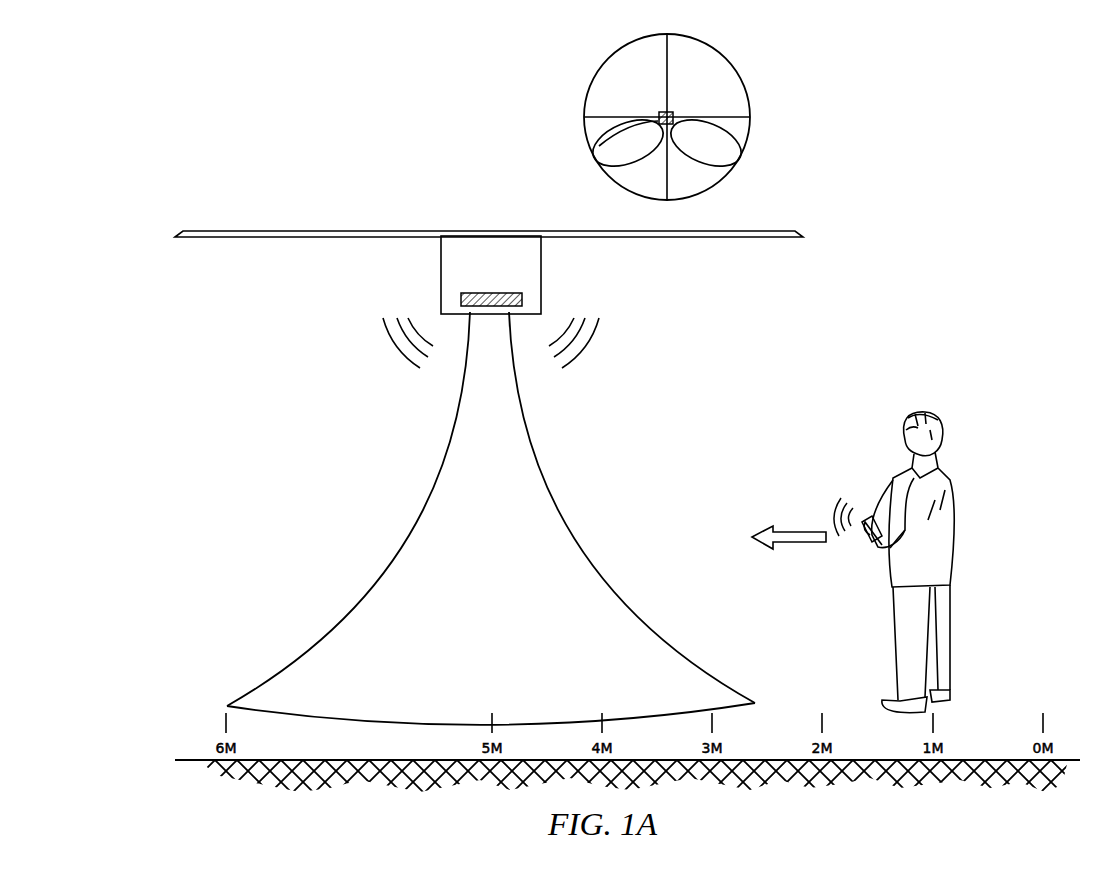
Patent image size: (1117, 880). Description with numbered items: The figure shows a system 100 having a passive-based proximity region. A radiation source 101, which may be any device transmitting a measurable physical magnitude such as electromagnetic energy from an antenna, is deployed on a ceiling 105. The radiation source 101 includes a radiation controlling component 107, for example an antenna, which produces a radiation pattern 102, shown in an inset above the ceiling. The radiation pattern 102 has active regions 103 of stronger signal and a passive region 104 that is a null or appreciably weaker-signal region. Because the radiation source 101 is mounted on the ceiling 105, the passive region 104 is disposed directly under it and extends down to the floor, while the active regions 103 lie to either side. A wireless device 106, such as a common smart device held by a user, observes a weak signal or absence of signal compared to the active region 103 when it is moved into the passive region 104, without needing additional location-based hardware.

The system 100 is at (171, 147).
The radiation source 101 is at (541, 258).
The radiation pattern 102 is at (733, 63).
The active region 103 is at (297, 462).
The passive region 104 is at (565, 522).
The ceiling 105 is at (317, 231).
The wireless device 106 is at (866, 518).
The radiation controlling component 107 is at (522, 297).